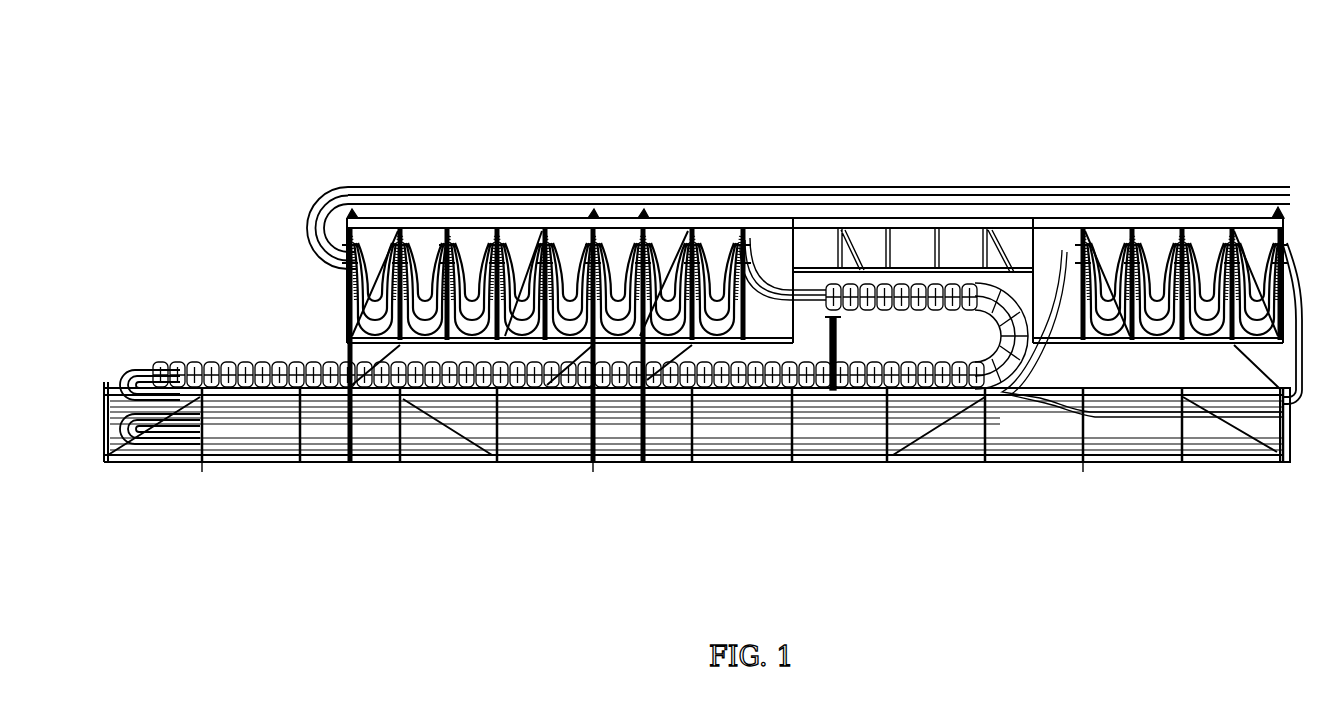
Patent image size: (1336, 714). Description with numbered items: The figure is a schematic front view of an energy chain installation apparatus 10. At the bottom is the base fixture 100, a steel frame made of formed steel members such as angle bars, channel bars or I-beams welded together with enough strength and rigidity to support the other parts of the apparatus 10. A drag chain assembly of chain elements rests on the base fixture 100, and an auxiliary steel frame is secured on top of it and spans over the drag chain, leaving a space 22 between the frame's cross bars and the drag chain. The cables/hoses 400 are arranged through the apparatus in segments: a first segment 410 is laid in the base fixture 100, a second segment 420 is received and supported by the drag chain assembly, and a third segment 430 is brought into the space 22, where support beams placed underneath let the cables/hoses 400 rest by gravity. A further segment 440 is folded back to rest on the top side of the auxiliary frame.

The energy chain installation apparatus 10 is at (380, 96).
The space 22 is at (1310, 262).
The base fixture 100 is at (1296, 435).
The cables/hoses 400 is at (316, 186).
The first segment 410 is at (1103, 433).
The second segment 420 is at (236, 366).
The third segment 430 is at (613, 278).
The further segment 440 is at (860, 193).